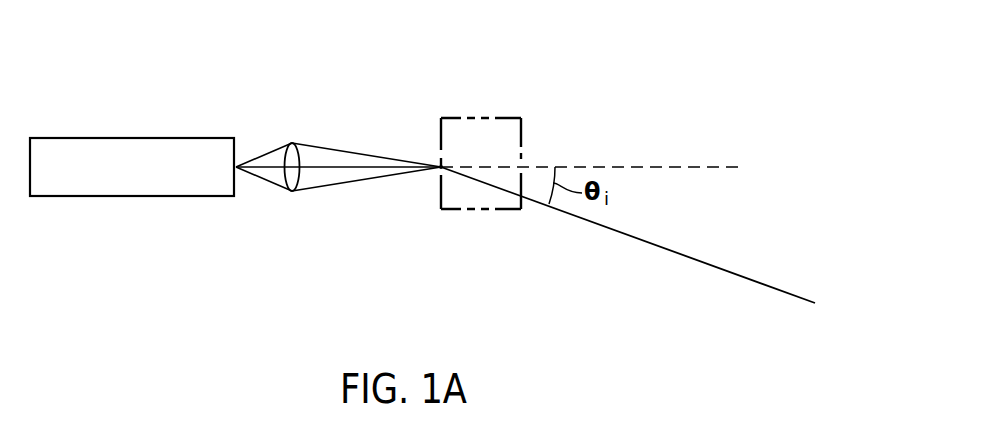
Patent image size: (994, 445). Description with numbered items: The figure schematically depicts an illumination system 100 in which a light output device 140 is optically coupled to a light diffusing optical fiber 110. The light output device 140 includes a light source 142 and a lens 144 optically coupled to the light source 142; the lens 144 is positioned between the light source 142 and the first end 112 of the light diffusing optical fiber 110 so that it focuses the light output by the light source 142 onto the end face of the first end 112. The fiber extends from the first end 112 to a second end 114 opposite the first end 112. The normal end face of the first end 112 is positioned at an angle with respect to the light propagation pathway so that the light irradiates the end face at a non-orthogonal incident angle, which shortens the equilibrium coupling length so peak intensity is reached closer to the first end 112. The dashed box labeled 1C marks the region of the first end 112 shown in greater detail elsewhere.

The illumination system 100 is at (643, 83).
The light diffusing optical fiber 110 is at (705, 265).
The first end 112 is at (450, 153).
The second end 114 is at (822, 320).
The light output device 140 is at (259, 114).
The light source 142 is at (136, 138).
The lens 144 is at (292, 192).
The detail region shown in FIG. 1C is at (522, 118).